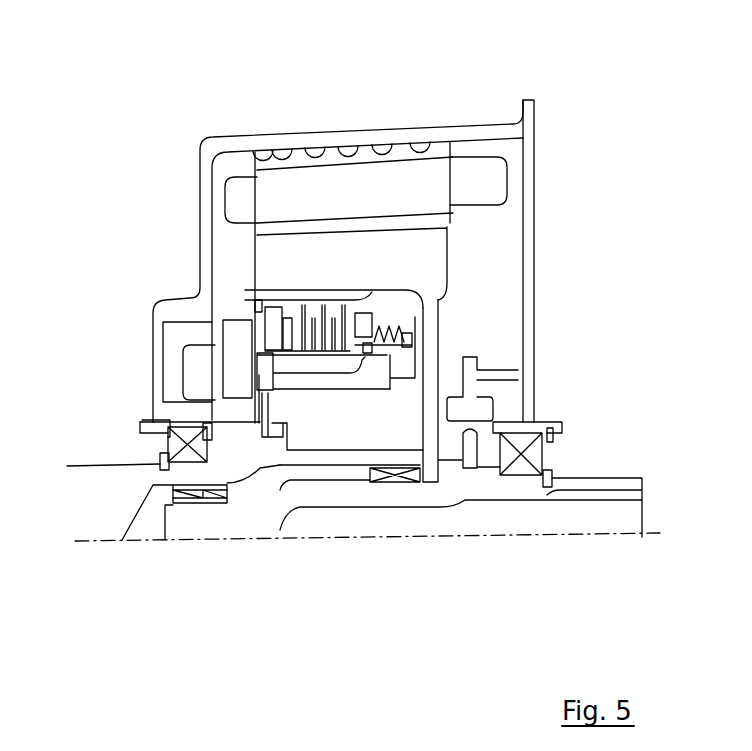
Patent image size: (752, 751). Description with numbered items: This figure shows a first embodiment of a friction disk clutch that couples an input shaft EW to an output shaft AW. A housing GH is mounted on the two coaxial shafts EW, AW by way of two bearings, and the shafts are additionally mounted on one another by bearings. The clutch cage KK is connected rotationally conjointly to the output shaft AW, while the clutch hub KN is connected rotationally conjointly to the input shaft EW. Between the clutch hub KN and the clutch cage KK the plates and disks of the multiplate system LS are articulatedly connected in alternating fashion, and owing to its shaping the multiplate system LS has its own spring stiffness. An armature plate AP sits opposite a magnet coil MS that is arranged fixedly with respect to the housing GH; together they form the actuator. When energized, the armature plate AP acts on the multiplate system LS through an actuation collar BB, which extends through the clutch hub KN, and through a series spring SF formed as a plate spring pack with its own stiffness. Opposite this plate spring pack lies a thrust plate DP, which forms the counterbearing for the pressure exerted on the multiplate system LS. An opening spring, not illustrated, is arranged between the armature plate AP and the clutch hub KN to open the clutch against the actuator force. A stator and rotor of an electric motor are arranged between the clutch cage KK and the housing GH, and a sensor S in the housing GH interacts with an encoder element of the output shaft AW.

The housing GH is at (210, 240).
The multiplate system LS is at (328, 323).
The series spring SF is at (398, 323).
The thrust plate DP is at (272, 327).
The magnet coil MS is at (193, 378).
The input shaft EW is at (115, 497).
The clutch cage KK is at (430, 290).
The sensor S is at (473, 405).
The output shaft AW is at (597, 480).
The armature plate AP is at (243, 385).
The clutch hub KN is at (267, 407).
The actuation collar BB is at (363, 383).